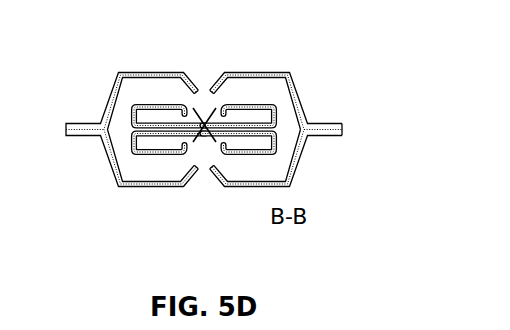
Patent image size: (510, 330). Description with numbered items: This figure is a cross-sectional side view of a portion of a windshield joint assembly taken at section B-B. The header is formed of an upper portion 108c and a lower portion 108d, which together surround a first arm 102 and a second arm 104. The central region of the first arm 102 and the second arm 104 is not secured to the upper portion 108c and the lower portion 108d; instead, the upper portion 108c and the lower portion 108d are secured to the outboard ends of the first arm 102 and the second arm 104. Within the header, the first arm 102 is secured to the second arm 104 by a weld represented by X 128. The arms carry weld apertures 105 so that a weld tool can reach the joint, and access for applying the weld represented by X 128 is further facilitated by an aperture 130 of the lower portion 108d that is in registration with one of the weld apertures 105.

The first arm 102 is at (131, 117).
The second arm 104 is at (131, 143).
The weld apertures 105 is at (235, 105).
The weld represented by X 128 is at (204, 124).
The aperture 130 is at (205, 89).
The upper portion 108c is at (300, 99).
The lower portion 108d is at (300, 160).